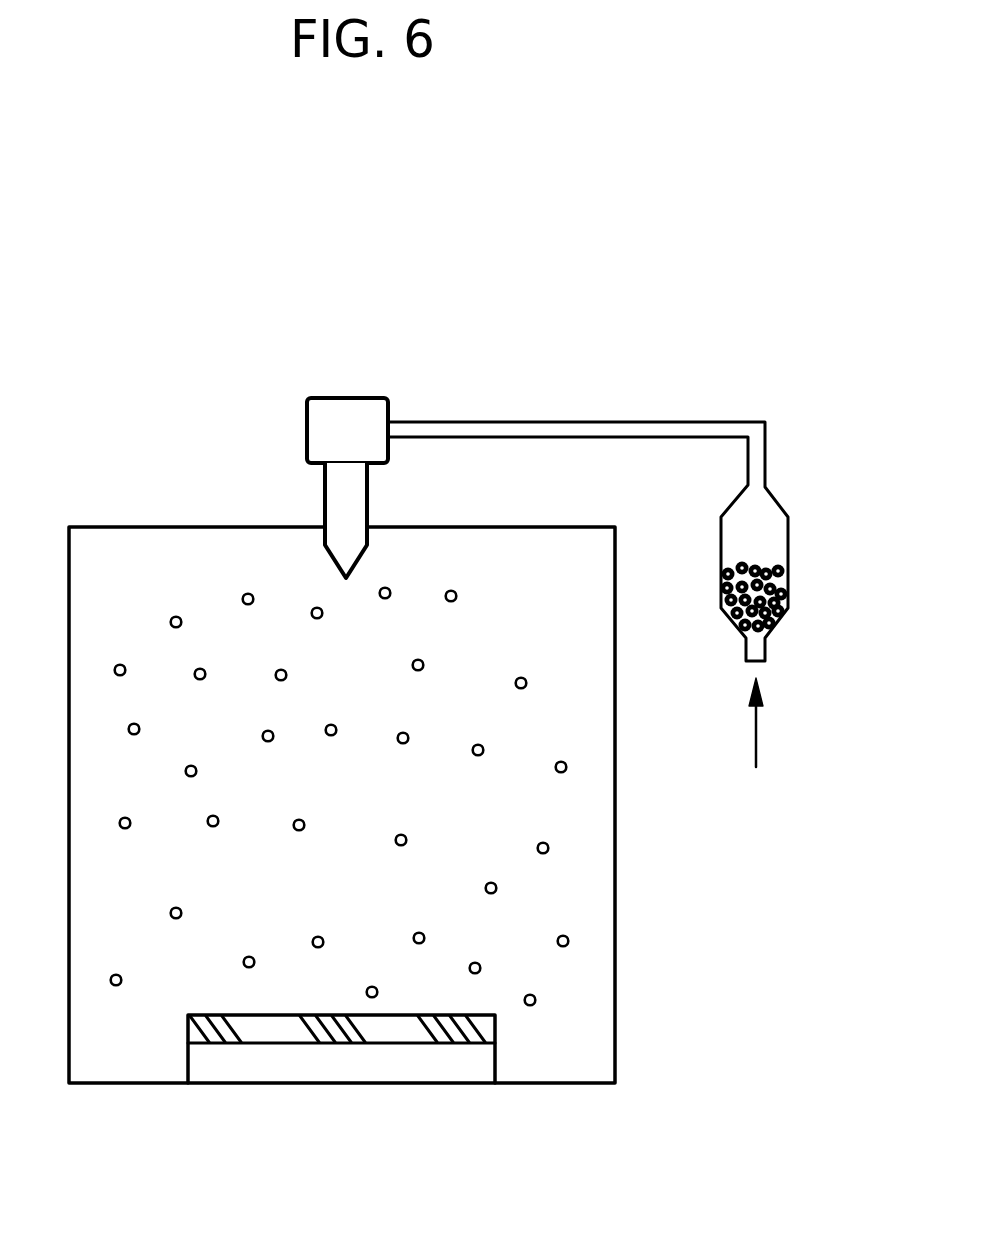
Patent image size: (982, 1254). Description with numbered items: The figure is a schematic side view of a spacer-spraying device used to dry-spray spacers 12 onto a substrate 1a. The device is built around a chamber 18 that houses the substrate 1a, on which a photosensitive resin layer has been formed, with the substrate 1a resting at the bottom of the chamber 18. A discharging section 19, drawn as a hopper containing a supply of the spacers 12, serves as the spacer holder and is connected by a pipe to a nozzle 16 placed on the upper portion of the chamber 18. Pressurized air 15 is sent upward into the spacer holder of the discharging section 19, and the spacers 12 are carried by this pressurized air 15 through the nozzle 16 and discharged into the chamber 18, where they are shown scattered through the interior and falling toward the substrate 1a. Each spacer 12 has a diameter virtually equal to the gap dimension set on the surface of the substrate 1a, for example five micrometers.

The substrate 1a is at (497, 1034).
The spacers 12 is at (762, 571).
The pressurized air 15 is at (759, 728).
The nozzle 16 is at (355, 490).
The chamber 18 is at (615, 1060).
The discharging section 19 is at (778, 494).